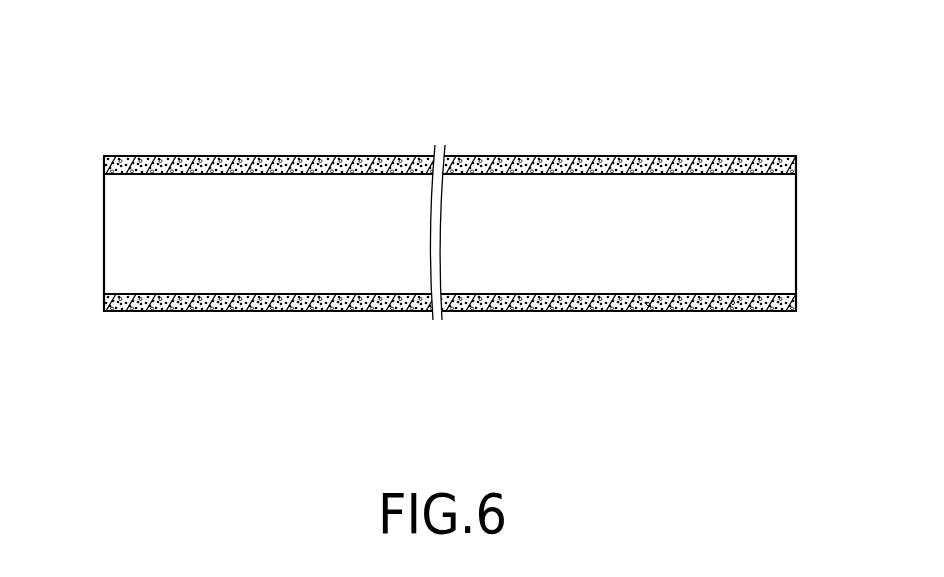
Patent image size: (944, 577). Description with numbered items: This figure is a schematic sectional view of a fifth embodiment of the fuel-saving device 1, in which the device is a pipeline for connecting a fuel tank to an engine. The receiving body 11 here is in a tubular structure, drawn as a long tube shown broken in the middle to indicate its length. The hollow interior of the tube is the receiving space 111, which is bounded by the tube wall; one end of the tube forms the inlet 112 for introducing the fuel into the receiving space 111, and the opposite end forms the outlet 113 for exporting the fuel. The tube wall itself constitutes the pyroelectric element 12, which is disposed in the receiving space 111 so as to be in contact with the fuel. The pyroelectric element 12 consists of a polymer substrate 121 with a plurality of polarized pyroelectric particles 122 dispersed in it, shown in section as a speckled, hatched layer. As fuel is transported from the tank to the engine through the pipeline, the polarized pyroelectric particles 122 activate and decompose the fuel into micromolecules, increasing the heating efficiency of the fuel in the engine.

The fuel-saving device 1 is at (390, 137).
The receiving body 11 is at (673, 155).
The receiving space 111 is at (212, 273).
The inlet 112 is at (104, 233).
The outlet 113 is at (796, 232).
The pyroelectric element 12 is at (735, 396).
The polymer substrate 121 is at (604, 310).
The polarized pyroelectric particles 122 is at (648, 310).